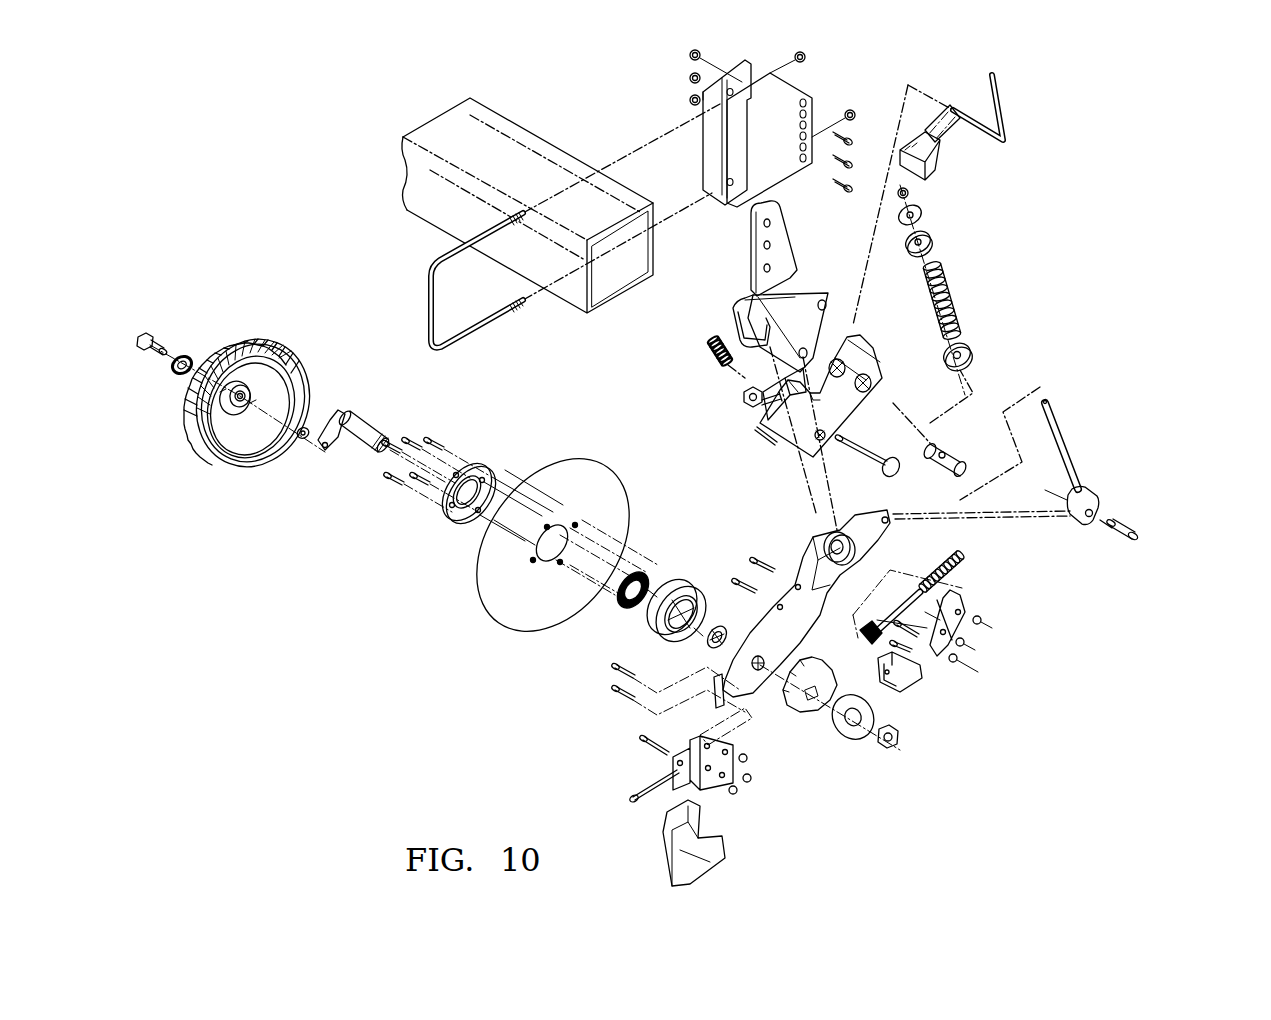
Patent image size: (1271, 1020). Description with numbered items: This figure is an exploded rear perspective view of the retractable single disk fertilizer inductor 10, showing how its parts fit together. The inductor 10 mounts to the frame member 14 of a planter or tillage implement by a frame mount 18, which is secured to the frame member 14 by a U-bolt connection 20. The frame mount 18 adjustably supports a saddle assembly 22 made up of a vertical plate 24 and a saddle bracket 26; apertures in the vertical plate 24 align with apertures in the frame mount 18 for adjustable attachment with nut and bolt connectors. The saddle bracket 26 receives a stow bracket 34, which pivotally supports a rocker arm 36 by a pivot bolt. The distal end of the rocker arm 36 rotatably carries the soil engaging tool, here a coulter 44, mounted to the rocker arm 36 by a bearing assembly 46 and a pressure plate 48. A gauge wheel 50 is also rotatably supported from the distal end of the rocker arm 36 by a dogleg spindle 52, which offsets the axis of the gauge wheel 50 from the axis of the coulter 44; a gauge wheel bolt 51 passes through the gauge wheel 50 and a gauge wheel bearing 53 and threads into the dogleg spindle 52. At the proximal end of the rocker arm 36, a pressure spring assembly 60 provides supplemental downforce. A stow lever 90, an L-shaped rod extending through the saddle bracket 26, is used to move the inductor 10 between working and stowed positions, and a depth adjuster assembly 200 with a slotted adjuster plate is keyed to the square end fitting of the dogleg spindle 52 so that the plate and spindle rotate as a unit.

The retractable single disk fertilizer inductor 10 is at (1133, 212).
The frame member 14 is at (448, 132).
The frame mount 18 is at (814, 83).
The U-bolt connection 20 is at (432, 293).
The saddle assembly 22 is at (733, 272).
The vertical plate 24 is at (783, 252).
The saddle bracket 26 is at (813, 287).
The stow bracket 34 is at (875, 375).
The rocker arm 36 is at (800, 563).
The coulter 44 is at (590, 470).
The bearing assembly 46 is at (652, 572).
The pressure plate 48 is at (452, 520).
The gauge wheel 50 is at (272, 340).
The gauge wheel bolt 51 is at (145, 352).
The dogleg spindle 52 is at (360, 427).
The gauge wheel bearing 53 is at (188, 357).
The pressure spring assembly 60 is at (1015, 292).
The stow lever 90 is at (1019, 93).
The depth adjuster assembly 200 is at (949, 746).